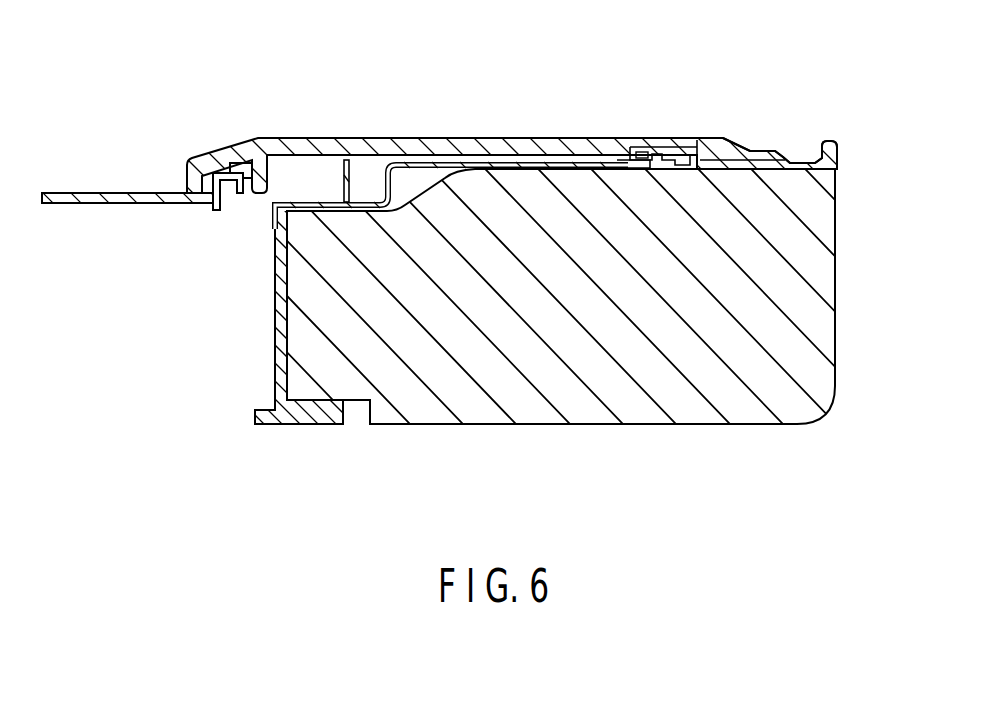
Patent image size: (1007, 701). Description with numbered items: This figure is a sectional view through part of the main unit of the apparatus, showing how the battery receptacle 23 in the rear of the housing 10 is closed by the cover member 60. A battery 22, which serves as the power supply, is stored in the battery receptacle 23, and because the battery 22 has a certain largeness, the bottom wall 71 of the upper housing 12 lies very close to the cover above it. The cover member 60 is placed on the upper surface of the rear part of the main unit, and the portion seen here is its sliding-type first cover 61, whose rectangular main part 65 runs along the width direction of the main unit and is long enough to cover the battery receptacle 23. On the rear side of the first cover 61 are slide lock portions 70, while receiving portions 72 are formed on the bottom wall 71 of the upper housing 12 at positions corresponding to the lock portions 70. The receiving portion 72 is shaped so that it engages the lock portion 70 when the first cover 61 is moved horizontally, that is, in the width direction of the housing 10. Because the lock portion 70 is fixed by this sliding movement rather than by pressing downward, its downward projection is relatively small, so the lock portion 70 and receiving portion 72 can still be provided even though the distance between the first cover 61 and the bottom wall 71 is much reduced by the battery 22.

The housing 10 is at (843, 158).
The upper housing 12 is at (777, 150).
The battery 22 is at (810, 318).
The battery receptacle 23 is at (423, 428).
The cover member 60 is at (569, 137).
The first cover 61 is at (498, 137).
The main part 65 is at (325, 137).
The slide lock portion 70 is at (239, 194).
The bottom wall 71 is at (437, 160).
The receiving portion 72 is at (227, 172).